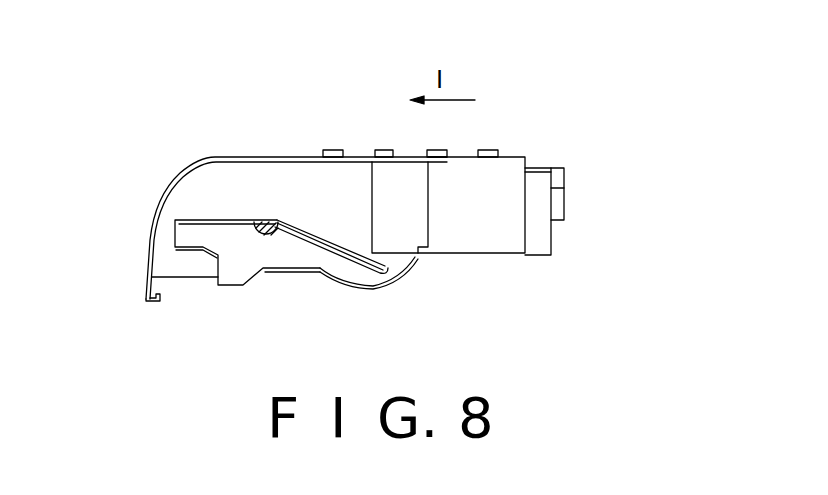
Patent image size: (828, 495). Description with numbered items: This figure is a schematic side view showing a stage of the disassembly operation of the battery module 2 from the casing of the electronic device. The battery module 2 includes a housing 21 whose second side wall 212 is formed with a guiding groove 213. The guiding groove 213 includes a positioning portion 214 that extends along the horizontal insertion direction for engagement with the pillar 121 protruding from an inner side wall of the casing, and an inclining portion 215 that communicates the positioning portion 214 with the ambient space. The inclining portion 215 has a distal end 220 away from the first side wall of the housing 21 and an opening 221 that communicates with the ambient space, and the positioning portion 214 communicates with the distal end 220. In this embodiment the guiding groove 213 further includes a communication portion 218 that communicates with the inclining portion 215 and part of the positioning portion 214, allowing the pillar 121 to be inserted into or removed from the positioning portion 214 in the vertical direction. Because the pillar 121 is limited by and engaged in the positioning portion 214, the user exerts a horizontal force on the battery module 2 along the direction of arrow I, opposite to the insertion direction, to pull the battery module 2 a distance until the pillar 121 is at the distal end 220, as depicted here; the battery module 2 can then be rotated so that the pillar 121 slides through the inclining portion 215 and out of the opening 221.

The battery module 2 is at (203, 153).
The housing 21 is at (171, 159).
The second side wall 212 is at (308, 173).
The guiding groove 213 is at (215, 219).
The positioning portion 214 is at (183, 235).
The inclining portion 215 is at (305, 241).
The communication portion 218 is at (223, 265).
The distal end 220 is at (234, 237).
The opening 221 is at (373, 273).
The pillar 121 is at (268, 221).